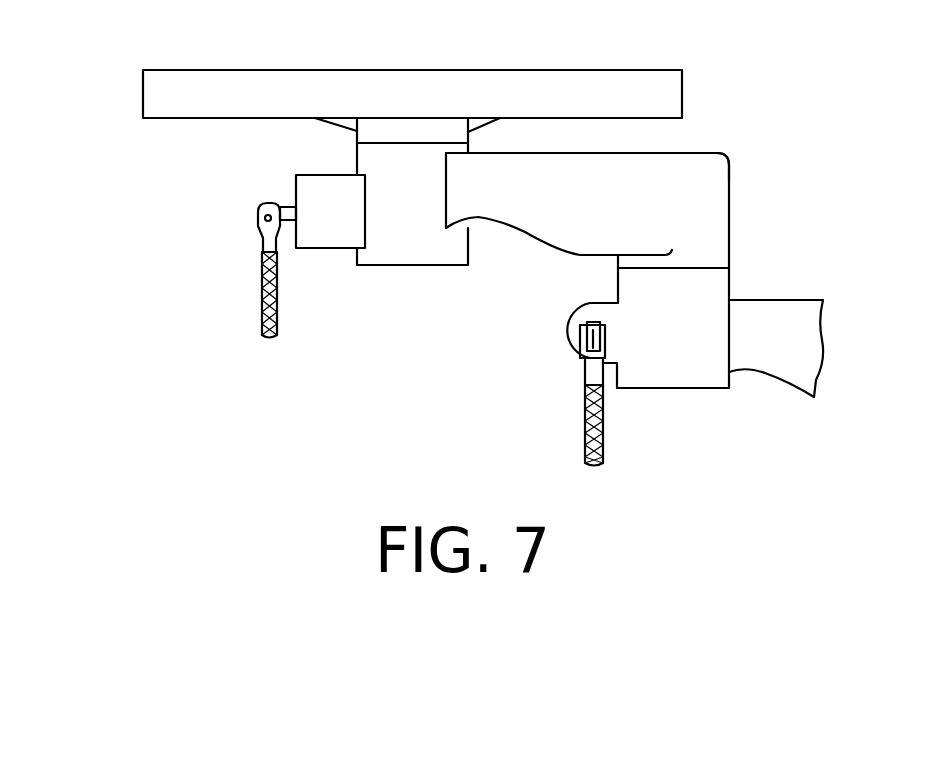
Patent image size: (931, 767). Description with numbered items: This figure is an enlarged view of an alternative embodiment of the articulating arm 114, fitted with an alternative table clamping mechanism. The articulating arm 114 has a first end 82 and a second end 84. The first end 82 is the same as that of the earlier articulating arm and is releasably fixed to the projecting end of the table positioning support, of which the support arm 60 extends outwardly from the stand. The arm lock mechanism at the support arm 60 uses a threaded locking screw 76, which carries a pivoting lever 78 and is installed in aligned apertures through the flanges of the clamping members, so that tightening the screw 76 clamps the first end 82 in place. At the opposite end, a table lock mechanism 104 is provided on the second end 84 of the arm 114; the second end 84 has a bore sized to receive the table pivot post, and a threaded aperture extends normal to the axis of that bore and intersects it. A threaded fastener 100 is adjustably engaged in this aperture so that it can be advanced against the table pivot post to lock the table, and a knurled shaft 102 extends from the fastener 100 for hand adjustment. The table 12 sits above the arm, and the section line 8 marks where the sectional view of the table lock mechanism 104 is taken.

The mounting plate 12 is at (176, 68).
The second end 84 is at (403, 253).
The table lock mechanism 104 is at (173, 307).
The threaded fastener 100 is at (281, 203).
The knurled clamp shaft 102 is at (263, 320).
The section line 8- 8 is at (243, 188).
The first end 82 is at (712, 237).
The articulating arm 114 is at (720, 149).
The threaded locking screw 76 is at (580, 332).
The pivoting lever 78 is at (585, 432).
The support arm 60 is at (790, 367).